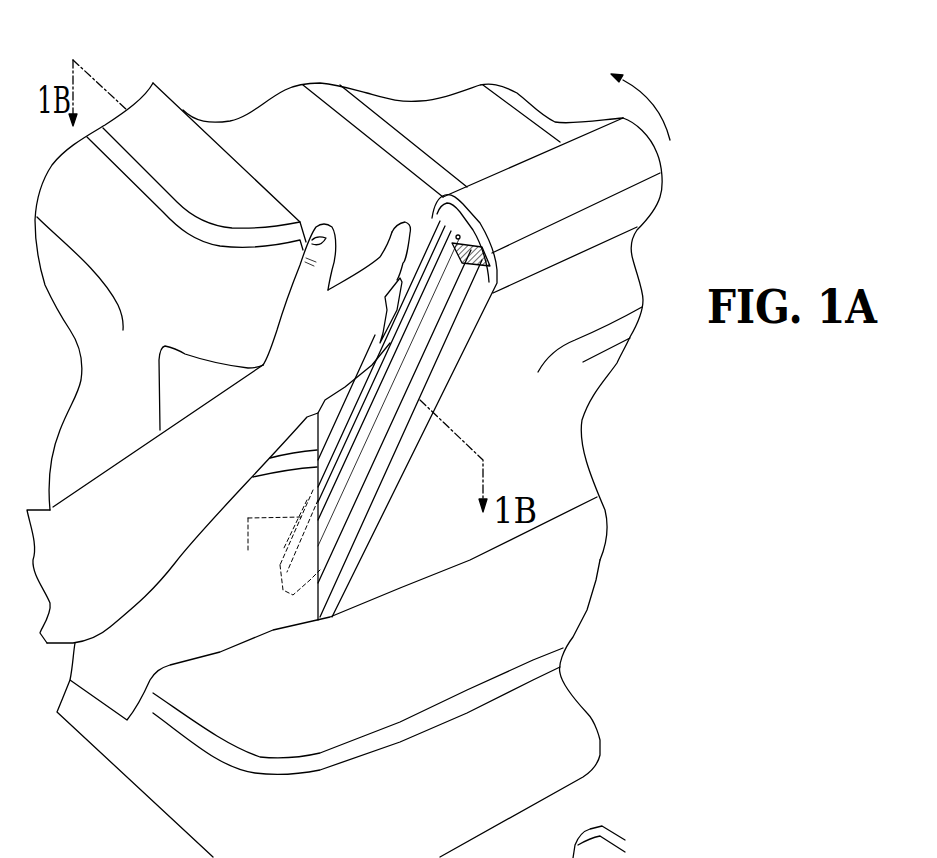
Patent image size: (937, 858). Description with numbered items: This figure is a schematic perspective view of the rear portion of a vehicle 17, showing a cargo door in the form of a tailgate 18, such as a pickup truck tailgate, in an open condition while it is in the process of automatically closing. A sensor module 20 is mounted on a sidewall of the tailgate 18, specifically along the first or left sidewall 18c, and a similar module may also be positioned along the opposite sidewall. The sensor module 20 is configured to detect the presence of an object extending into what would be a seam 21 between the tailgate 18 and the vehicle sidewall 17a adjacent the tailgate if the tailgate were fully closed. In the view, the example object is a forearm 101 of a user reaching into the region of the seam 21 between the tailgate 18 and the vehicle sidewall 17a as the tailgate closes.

The vehicle 17 is at (50, 62).
The vehicle sidewall 17a is at (172, 135).
The tailgate 18 is at (568, 170).
The first or left sidewall of the tailgate 18c is at (357, 523).
The sensor module 20 is at (463, 203).
The seam 21 is at (376, 224).
The forearm of a user 101 is at (303, 357).